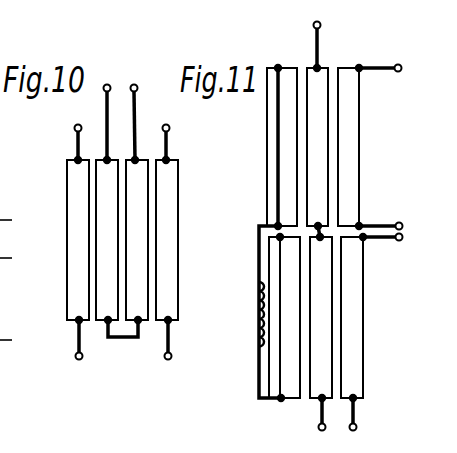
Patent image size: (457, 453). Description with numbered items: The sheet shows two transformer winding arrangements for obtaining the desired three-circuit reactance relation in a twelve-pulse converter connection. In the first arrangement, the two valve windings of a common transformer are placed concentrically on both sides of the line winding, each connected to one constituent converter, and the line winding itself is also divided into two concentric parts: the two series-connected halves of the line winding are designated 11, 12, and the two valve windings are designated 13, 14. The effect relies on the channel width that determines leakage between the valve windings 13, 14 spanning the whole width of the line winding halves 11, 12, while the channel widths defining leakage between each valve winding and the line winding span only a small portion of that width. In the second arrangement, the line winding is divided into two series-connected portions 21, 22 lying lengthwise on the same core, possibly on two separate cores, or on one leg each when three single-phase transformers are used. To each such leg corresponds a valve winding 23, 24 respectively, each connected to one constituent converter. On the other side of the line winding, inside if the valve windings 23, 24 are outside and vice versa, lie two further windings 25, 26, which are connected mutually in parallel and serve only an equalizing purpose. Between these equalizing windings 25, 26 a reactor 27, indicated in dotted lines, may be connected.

In FIG. 10, the line winding half 11 is at (107, 210).
In FIG. 10, the line winding half 12 is at (132, 206).
In FIG. 10, the valve winding 13 is at (80, 245).
In FIG. 10, the valve winding 14 is at (160, 243).
In FIG. 11, the line winding portion 21 is at (317, 127).
In FIG. 11, the line winding portion 22 is at (318, 290).
In FIG. 11, the valve winding 23 is at (347, 163).
In FIG. 11, the valve winding 24 is at (348, 327).
In FIG. 11, the equalizing winding 25 is at (292, 150).
In FIG. 11, the equalizing winding 26 is at (292, 273).
In FIG. 11, the reactor 27 is at (259, 307).